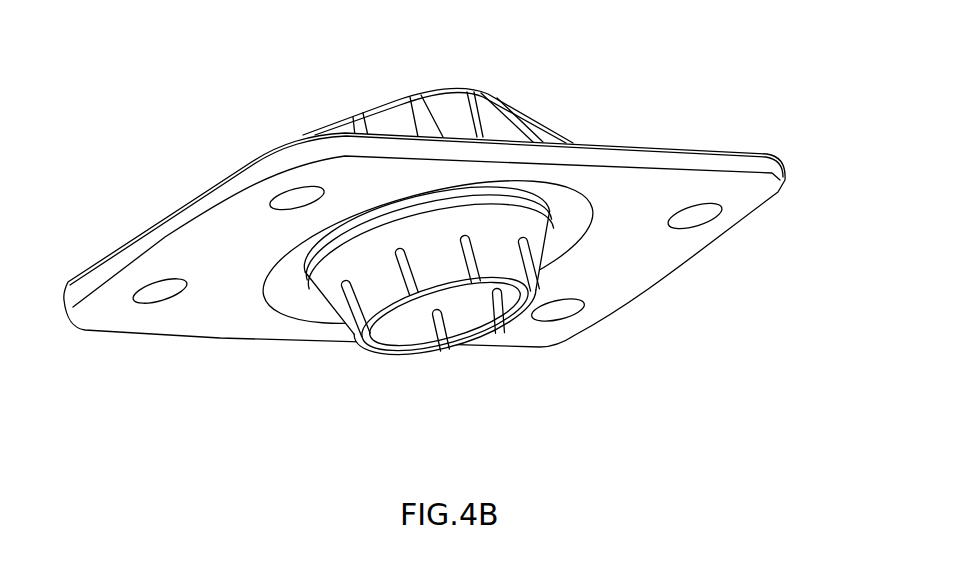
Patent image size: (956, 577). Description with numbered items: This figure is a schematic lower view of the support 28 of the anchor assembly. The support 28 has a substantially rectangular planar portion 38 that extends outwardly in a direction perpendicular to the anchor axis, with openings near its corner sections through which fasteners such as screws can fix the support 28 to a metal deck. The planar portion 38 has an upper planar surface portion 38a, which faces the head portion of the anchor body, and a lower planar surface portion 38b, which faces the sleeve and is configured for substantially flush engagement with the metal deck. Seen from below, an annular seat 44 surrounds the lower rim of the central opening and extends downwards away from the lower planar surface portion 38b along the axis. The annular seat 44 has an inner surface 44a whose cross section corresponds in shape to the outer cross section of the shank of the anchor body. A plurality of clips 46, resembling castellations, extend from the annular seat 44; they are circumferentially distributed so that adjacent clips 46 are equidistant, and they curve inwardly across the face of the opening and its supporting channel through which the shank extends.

The support 28 is at (673, 380).
The planar portion 38 is at (782, 168).
The upper planar surface portion 38a is at (678, 147).
The lower planar surface portion 38b is at (700, 243).
The annular seat 44 is at (325, 271).
The inner surface 44a is at (473, 290).
The clips 46 is at (382, 286).